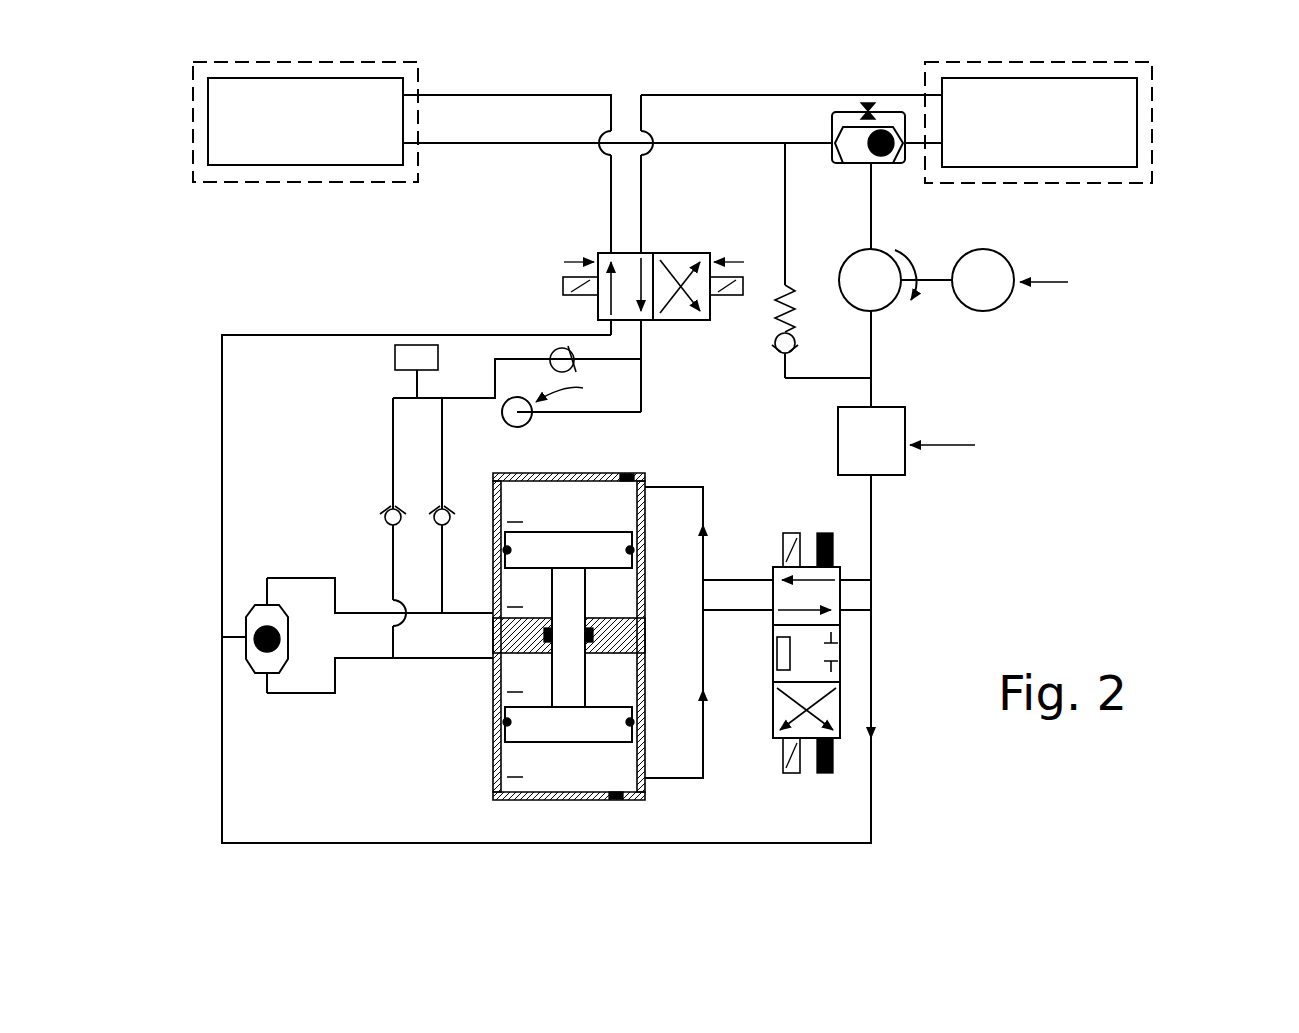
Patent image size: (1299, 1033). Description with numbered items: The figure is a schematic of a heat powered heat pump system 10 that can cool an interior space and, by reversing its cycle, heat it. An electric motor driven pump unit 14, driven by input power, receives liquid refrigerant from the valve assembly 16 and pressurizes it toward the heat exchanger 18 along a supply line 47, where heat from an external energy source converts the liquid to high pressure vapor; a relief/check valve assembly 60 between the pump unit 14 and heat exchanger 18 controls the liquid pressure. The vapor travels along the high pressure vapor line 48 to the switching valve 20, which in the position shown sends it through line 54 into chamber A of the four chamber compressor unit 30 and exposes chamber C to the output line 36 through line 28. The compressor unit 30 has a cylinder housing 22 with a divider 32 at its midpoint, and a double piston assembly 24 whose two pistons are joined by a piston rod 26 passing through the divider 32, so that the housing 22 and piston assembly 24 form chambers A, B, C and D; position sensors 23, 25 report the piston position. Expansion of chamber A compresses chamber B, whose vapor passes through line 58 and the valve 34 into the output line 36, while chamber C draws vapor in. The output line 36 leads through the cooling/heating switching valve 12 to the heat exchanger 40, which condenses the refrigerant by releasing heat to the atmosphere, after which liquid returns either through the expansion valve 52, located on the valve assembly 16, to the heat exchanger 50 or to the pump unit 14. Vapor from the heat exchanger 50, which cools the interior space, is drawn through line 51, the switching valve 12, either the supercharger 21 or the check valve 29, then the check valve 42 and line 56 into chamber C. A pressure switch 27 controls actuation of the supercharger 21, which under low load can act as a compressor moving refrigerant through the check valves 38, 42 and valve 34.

The heat powered heat pump system 10 is at (1205, 248).
The cooling/heating switching valve 12 is at (592, 220).
The electric motor driven pump unit 14 is at (873, 313).
The valve assembly 16 is at (857, 137).
The heat exchanger 18 is at (906, 432).
The switching valve 20 is at (858, 597).
The supercharger 21 is at (531, 420).
The cylinder housing 22 is at (583, 471).
The piston assembly position sensor 23 is at (627, 471).
The double piston assembly 24 is at (545, 763).
The piston assembly position sensor 25 is at (618, 800).
The piston rod 26 is at (565, 607).
The pressure switch 27 is at (395, 360).
The line 28 is at (660, 780).
The check valve 29 is at (553, 356).
The four chamber compressor unit 30 is at (569, 648).
The divider 32 is at (493, 638).
The valve 34 is at (287, 645).
The output line 36 is at (222, 590).
The check valve 38 is at (438, 512).
The heat exchanger 40 is at (268, 197).
The check valve 42 is at (385, 525).
The supply line 47 is at (872, 393).
The high pressure vapor line 48 is at (874, 522).
The heat exchanger 50 is at (1080, 188).
The line 51 is at (680, 95).
The expansion valve 52 is at (852, 112).
The line 54 is at (703, 508).
The line 56 is at (415, 660).
The line 58 is at (470, 613).
The relief/check valve assembly 60 is at (775, 318).